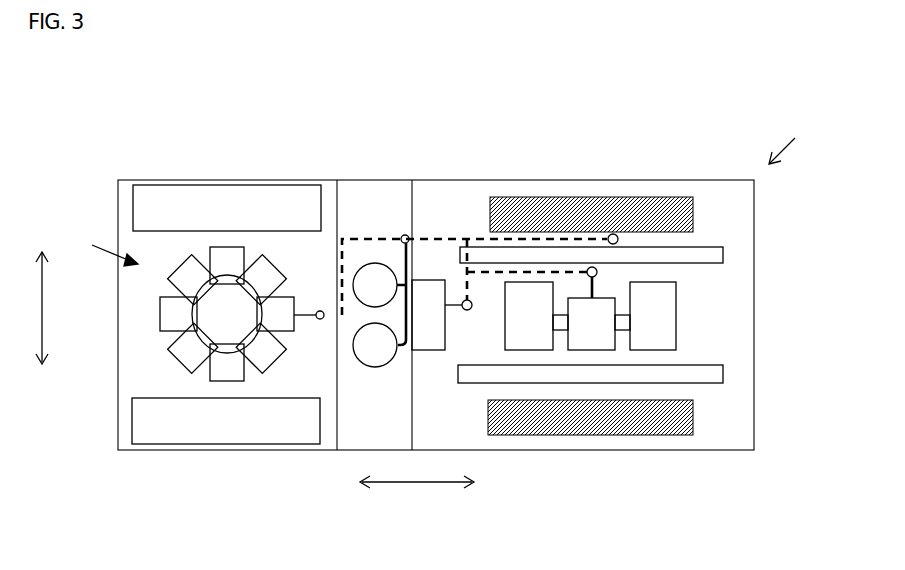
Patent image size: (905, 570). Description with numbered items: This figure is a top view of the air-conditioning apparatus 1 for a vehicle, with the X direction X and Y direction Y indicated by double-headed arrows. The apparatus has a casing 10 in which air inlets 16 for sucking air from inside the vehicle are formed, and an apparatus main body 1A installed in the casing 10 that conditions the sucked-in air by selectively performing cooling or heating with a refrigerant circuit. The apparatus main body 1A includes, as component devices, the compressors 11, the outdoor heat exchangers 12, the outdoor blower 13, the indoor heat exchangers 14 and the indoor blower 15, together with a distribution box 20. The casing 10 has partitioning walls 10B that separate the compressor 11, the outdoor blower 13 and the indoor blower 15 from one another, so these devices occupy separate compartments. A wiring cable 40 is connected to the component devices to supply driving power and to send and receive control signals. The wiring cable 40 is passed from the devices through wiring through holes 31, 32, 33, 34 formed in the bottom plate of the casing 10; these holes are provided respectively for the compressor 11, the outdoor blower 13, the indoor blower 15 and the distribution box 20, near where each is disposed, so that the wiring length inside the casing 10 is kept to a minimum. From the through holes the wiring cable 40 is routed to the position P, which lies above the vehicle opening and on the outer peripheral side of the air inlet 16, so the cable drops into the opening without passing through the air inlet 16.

The air-conditioning apparatus 1 is at (787, 138).
The apparatus main body 1A is at (100, 248).
The casing 10 is at (118, 200).
The partitioning walls 10B is at (336, 200).
The compressor 11 is at (380, 268).
The outdoor heat exchanger 12 is at (235, 200).
The outdoor blower 13 is at (228, 322).
The indoor heat exchanger 14 is at (706, 257).
The indoor blower 15 is at (595, 320).
The air inlets 16 is at (672, 197).
The distribution box 20 is at (432, 352).
The wiring through hole 31 is at (320, 322).
The wiring through hole 32 is at (410, 236).
The wiring through hole 33 is at (470, 310).
The wiring through hole 34 is at (590, 267).
The wiring cable 40 is at (478, 238).
The position above the opening P is at (613, 234).
The X direction X is at (412, 486).
The Y direction Y is at (42, 310).